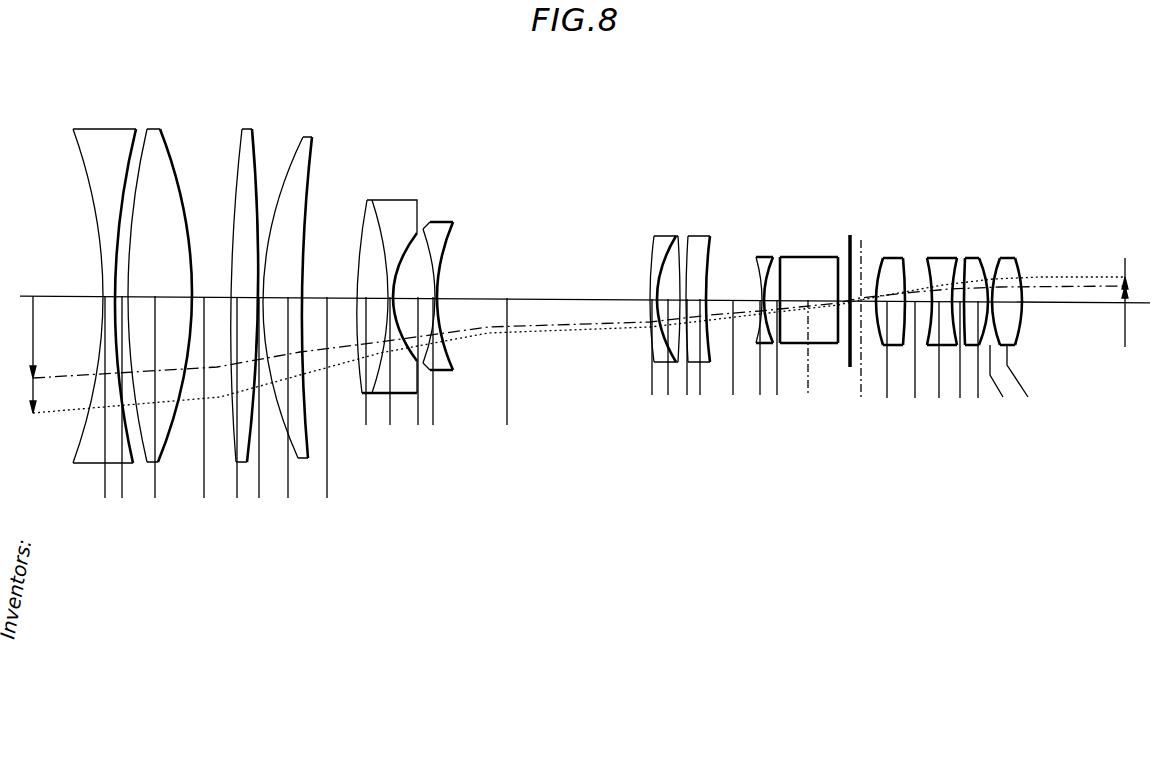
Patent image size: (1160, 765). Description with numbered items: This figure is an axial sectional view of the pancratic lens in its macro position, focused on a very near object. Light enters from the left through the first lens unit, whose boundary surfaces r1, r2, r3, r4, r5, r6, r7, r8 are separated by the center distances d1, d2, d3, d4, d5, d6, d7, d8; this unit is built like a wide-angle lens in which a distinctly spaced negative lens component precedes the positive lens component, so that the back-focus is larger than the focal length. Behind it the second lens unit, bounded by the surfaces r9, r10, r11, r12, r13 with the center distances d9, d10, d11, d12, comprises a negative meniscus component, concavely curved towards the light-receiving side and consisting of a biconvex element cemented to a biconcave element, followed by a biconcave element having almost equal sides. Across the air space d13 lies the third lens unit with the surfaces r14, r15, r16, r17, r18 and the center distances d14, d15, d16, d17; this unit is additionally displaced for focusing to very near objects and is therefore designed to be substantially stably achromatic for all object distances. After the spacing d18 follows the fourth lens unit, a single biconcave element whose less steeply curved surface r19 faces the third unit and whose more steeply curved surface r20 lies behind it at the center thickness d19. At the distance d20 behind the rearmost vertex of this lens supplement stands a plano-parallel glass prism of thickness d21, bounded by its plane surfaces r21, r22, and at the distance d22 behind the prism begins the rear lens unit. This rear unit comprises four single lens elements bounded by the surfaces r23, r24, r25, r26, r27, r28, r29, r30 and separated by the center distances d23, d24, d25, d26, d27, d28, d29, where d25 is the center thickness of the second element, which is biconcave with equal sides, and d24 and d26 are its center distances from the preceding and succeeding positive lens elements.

The radius of curvature of the first boundary surface r1 is at (91, 185).
The radius of curvature of the second boundary surface r2 is at (131, 148).
The radius of curvature of the third boundary surface r3 is at (144, 150).
The radius of curvature of the fourth boundary surface r4 is at (167, 150).
The radius of curvature of the fifth boundary surface r5 is at (236, 172).
The radius of curvature of the sixth boundary surface r6 is at (255, 157).
The radius of curvature of the seventh boundary surface r7 is at (294, 158).
The radius of curvature of the eighth boundary surface r8 is at (310, 168).
The radius of curvature of the ninth boundary surface r9 is at (358, 255).
The radius of curvature of the tenth boundary surface r10 is at (380, 229).
The radius of curvature of the eleventh boundary surface r11 is at (415, 236).
The radius of curvature of the twelfth boundary surface r12 is at (427, 250).
The radius of curvature of the thirteenth boundary surface r13 is at (443, 260).
The radius of curvature of the fourteenth boundary surface r14 is at (650, 272).
The radius of curvature of the fifteenth boundary surface r15 is at (660, 248).
The radius of curvature of the sixteenth boundary surface r16 is at (679, 258).
The radius of curvature of the seventeenth boundary surface r17 is at (687, 252).
The radius of curvature of the eighteenth boundary surface r18 is at (708, 258).
The radius of curvature of the nineteenth boundary surface r19 is at (759, 277).
The radius of curvature of the twentieth boundary surface r20 is at (770, 264).
The radius of curvature of surface 21 r21 is at (782, 277).
The radius of curvature of surface 22 r22 is at (835, 277).
The radius of curvature of the twenty-third boundary surface r23 is at (875, 273).
The radius of curvature of the twenty-fourth boundary surface r24 is at (903, 270).
The radius of curvature of the twenty-fifth boundary surface r25 is at (928, 272).
The radius of curvature of the twenty-sixth boundary surface r26 is at (957, 271).
The radius of curvature of the twenty-seventh boundary surface r27 is at (966, 272).
The radius of curvature of the twenty-eighth boundary surface r28 is at (985, 272).
The radius of curvature of the twenty-ninth boundary surface r29 is at (996, 273).
The radius of curvature of the thirtieth boundary surface r30 is at (1019, 272).
The center thickness of the first lens element d1 is at (108, 410).
The center distance between second and third boundary surfaces d2 is at (126, 410).
The center thickness between third and fourth boundary surfaces d3 is at (156, 410).
The center distance between fourth and fifth boundary surfaces d4 is at (206, 411).
The center thickness between fifth and sixth boundary surfaces d5 is at (240, 411).
The center distance between sixth and seventh boundary surfaces d6 is at (261, 411).
The center thickness between seventh and eighth boundary surfaces d7 is at (290, 411).
The center distance between eighth and ninth boundary surfaces d8 is at (325, 411).
The center thickness between ninth and tenth boundary surfaces d9 is at (370, 375).
The center distance between tenth and eleventh boundary surfaces d10 is at (394, 375).
The center thickness between eleventh and twelfth boundary surfaces d11 is at (419, 375).
The center distance between twelfth and thirteenth boundary surfaces d12 is at (441, 375).
The center distance between thirteenth and fourteenth boundary surfaces d13 is at (511, 376).
The center distance between fourteenth and fifteenth boundary surfaces d14 is at (653, 359).
The center thickness between fifteenth and sixteenth boundary surfaces d15 is at (674, 359).
The center distance between sixteenth and seventeenth boundary surfaces d16 is at (694, 359).
The center thickness between seventeenth and eighteenth boundary surfaces d17 is at (713, 359).
The center distance between eighteenth and nineteenth boundary surfaces d18 is at (735, 360).
The center thickness of the biconcave fourth lens unit d19 is at (761, 360).
The distance from lens supplement to prism d20 is at (784, 360).
The prism thickness d21 is at (811, 360).
The distance from prism to rear lens unit d22 is at (863, 331).
The center thickness of the first rear-unit element d23 is at (893, 361).
The center distance from first to second rear-unit element d24 is at (919, 361).
The center thickness of the biconcave second rear-unit element d25 is at (944, 361).
The center distance from second to third rear-unit element d26 is at (966, 361).
The center thickness of the third rear-unit element d27 is at (987, 361).
The center distance between twenty-eighth and twenty-ninth boundary surfaces d28 is at (1005, 383).
The center thickness of the last rear-unit element d29 is at (1026, 383).